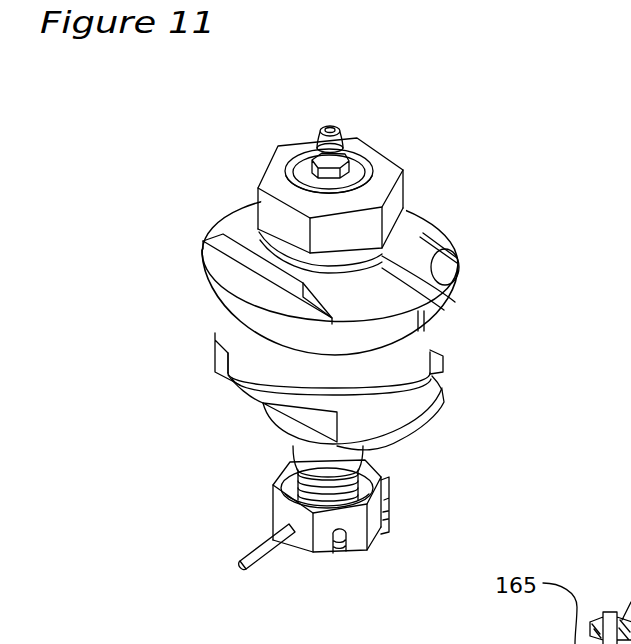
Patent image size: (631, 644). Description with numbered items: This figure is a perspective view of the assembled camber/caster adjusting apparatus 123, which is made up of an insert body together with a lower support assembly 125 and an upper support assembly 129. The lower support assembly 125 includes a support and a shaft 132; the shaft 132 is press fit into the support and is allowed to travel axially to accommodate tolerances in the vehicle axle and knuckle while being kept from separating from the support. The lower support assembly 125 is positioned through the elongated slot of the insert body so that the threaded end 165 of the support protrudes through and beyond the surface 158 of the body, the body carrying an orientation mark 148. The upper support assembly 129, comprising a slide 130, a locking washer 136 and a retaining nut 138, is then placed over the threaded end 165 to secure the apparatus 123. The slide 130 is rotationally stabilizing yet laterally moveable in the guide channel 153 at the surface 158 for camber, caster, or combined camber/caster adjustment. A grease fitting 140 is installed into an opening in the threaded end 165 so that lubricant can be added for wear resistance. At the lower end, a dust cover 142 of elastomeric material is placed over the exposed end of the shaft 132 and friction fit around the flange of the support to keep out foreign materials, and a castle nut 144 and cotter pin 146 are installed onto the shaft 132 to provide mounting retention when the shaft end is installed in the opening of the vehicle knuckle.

The grease fitting 140 is at (336, 123).
The threaded end 165 is at (358, 170).
The retaining nut 138 is at (403, 188).
The slide 130 is at (432, 232).
The locking washer 136 is at (262, 223).
The guide channel 153 is at (428, 286).
The surface 158 is at (450, 302).
The orientation mark 148 is at (428, 300).
The dust cover 142 is at (435, 399).
The shaft 132 is at (300, 446).
The castle nut 144 is at (380, 503).
The cotter pin 146 is at (291, 530).
The upper support assembly 129 is at (238, 173).
The adjusting apparatus 123 is at (201, 199).
The lower support assembly 125 is at (231, 414).